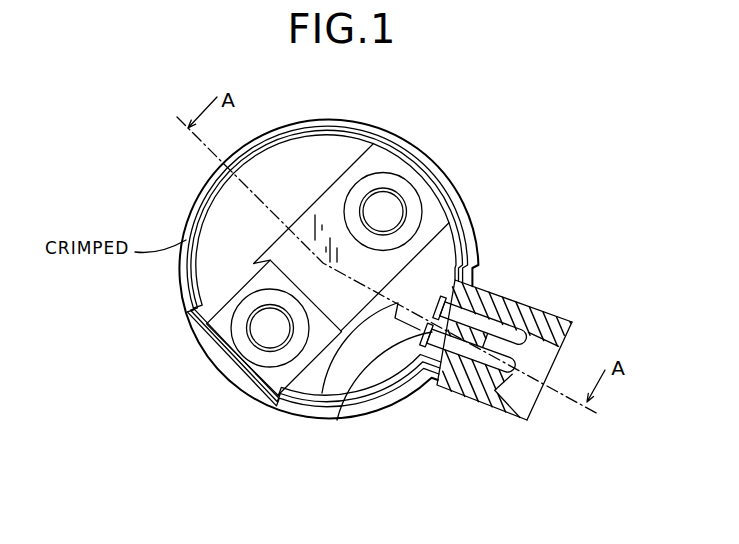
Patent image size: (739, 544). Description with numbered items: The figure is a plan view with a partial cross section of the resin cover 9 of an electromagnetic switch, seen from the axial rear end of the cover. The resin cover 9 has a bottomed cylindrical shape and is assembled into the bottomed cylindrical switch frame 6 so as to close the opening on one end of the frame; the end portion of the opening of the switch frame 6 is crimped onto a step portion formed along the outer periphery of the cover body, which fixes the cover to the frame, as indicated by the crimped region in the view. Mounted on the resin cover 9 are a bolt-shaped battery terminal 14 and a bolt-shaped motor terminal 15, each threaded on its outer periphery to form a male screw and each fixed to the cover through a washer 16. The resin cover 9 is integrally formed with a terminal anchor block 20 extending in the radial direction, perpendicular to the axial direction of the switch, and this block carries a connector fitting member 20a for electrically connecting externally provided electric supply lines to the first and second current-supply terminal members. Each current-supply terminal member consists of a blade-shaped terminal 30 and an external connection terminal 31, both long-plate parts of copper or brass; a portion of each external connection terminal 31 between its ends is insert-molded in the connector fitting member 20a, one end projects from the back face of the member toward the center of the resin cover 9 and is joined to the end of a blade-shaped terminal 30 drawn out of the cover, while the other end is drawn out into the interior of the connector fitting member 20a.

The switch frame 6 is at (336, 121).
The resin cover 9 is at (293, 160).
The battery terminal 14 is at (267, 338).
The motor terminal 15 is at (396, 207).
The washer 16 is at (388, 182).
The terminal anchor block 20 is at (499, 289).
The connector fitting member 20a is at (537, 304).
The blade-shaped terminal 30 is at (338, 422).
The external connection terminal 31 is at (513, 378).